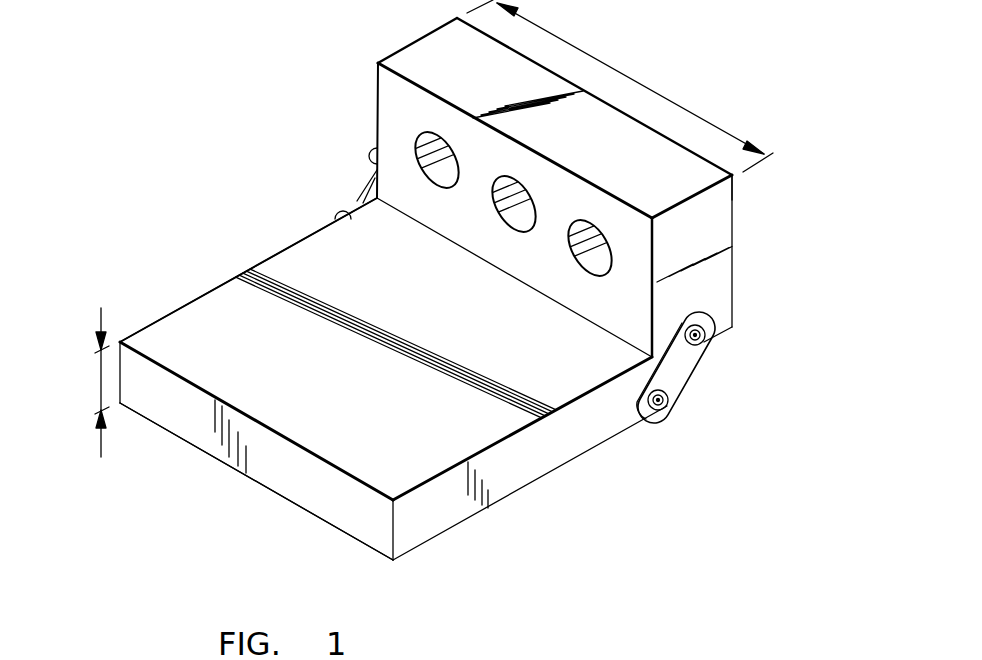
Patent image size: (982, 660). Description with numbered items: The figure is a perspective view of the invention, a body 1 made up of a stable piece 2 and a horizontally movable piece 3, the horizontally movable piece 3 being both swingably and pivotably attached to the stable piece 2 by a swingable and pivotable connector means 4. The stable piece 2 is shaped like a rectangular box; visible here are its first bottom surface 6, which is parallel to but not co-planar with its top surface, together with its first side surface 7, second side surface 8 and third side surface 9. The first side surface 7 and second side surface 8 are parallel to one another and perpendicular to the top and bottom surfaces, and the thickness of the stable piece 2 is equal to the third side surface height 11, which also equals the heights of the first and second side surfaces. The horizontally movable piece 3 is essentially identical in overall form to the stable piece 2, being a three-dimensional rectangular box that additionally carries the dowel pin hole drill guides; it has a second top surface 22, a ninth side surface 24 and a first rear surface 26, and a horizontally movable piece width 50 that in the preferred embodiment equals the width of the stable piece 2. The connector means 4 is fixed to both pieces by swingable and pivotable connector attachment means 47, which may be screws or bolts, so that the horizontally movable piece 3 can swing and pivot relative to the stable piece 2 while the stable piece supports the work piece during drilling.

The body 1 is at (228, 60).
The stable piece 2 is at (363, 380).
The horizontally movable piece 3 is at (582, 149).
The swingable and pivotable connector means 4 is at (663, 367).
The first bottom surface 6 is at (440, 558).
The first side surface 7 is at (218, 243).
The second side surface 8 is at (560, 453).
The third side surface 9 is at (282, 478).
The third side surface height 11 is at (101, 380).
The second top surface 22 is at (437, 57).
The ninth side surface 24 is at (712, 249).
The first rear surface 26 is at (782, 214).
The swingable and pivotable connector attachment means 47 is at (706, 339).
The horizontally movable piece width 50 is at (613, 70).